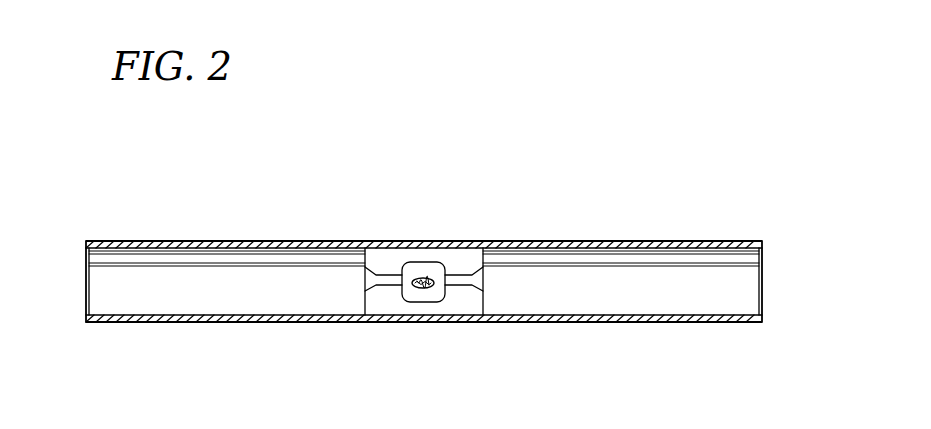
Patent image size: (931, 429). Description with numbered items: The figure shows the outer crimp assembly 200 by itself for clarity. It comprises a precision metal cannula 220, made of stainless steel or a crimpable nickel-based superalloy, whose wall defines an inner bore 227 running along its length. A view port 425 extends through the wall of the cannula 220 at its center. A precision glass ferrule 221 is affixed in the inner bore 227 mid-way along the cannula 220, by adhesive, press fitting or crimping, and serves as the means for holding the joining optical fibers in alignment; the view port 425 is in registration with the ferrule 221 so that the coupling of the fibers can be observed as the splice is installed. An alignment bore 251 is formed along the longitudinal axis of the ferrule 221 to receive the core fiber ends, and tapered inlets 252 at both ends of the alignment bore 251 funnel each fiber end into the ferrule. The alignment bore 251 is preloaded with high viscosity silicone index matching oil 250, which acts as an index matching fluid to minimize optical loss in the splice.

The outer crimp assembly 200 is at (352, 187).
The cannula 220 is at (216, 240).
The glass ferrule 221 is at (468, 262).
The inner bore 227 is at (106, 250).
The alignment bore 251 is at (368, 283).
The tapered inlets 252 is at (483, 277).
The view port 425 is at (425, 262).
The silicone index matching oil 250 is at (430, 288).